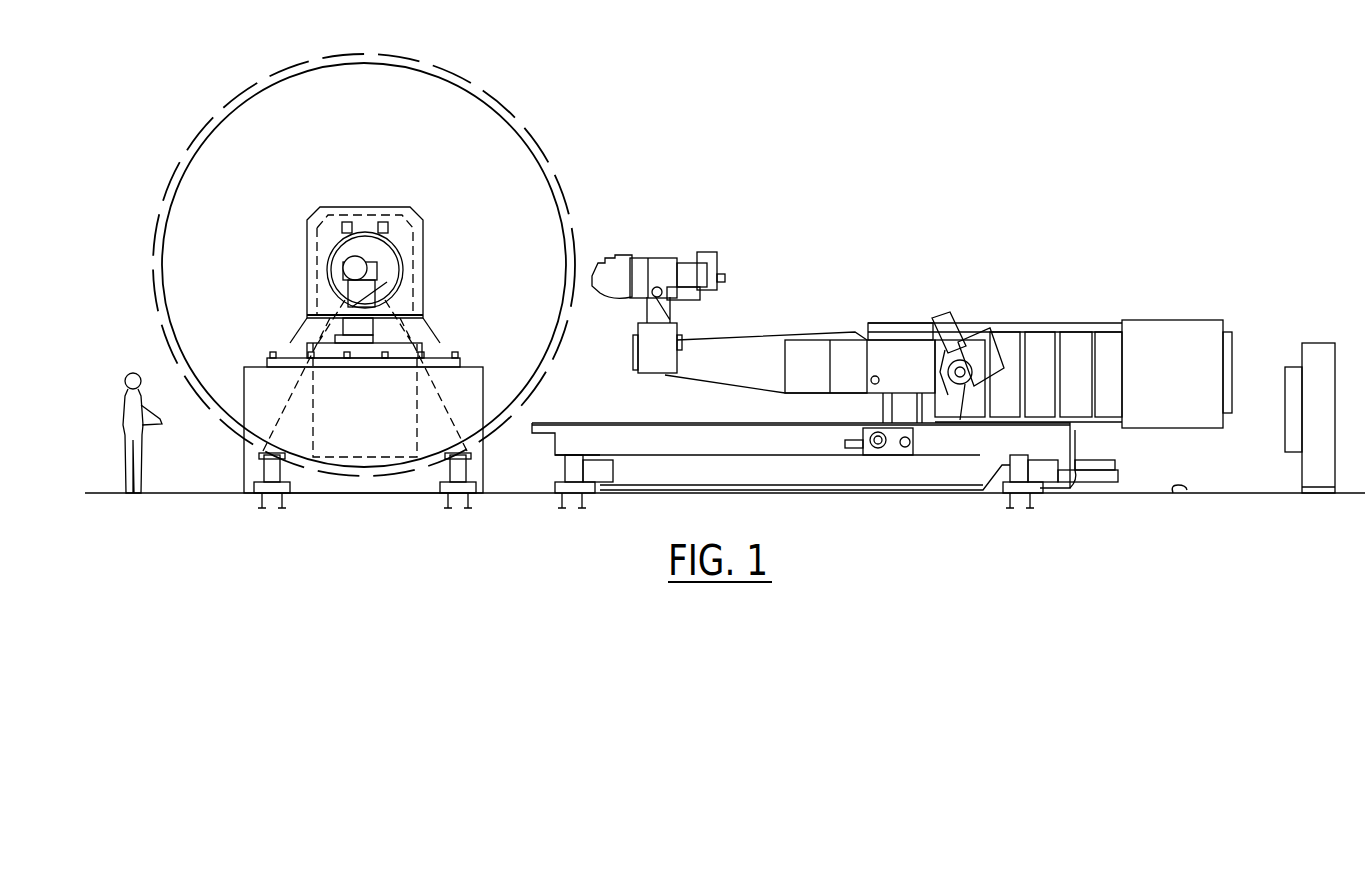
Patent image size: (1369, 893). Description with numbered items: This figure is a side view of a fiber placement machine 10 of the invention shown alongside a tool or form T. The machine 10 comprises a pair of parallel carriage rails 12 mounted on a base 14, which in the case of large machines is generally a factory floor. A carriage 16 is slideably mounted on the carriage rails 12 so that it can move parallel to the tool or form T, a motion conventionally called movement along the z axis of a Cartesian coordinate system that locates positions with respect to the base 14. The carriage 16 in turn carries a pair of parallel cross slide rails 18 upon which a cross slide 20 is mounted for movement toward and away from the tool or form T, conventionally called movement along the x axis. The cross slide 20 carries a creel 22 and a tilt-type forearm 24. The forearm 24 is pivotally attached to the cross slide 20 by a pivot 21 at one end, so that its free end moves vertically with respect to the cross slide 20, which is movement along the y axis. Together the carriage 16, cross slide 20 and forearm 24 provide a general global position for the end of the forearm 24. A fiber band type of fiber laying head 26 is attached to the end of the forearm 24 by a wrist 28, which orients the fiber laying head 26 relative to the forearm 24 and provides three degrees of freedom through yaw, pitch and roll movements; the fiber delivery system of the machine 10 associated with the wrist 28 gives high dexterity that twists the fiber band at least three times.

The tool or form T is at (475, 118).
The fiber placement machine 10 is at (790, 162).
The carriage rails 12 is at (457, 493).
The base 14 is at (1187, 492).
The carriage 16 is at (915, 475).
The cross slide rails 18 is at (776, 424).
The cross slide 20 is at (1043, 327).
The pivot 21 is at (972, 385).
The creel 22 is at (972, 313).
The tilt-type forearm 24 is at (765, 345).
The fiber laying head 26 is at (621, 260).
The wrist 28 is at (652, 273).